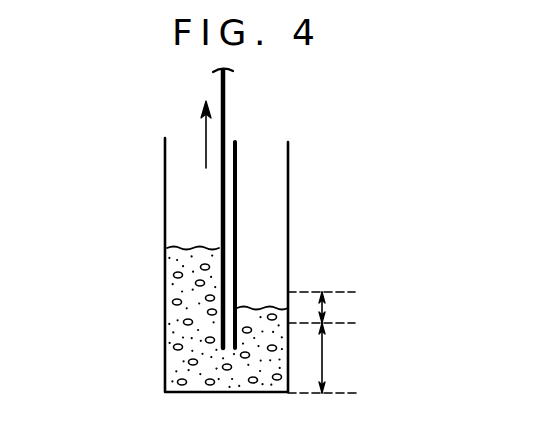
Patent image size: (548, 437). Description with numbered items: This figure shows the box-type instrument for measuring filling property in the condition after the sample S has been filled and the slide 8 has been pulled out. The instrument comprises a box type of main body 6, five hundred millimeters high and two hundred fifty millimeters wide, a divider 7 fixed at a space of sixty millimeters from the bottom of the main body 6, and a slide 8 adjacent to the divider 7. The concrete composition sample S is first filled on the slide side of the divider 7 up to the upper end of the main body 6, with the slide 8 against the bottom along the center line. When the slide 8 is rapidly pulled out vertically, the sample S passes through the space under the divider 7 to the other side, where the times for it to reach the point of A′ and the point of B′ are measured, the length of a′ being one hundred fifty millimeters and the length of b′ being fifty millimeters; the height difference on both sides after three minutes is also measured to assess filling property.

The main body 6 is at (288, 192).
The divider 7 is at (237, 180).
The slide 8 is at (226, 112).
The sample S is at (175, 291).
The point A' A′ is at (288, 323).
The point B' B′ is at (288, 292).
The length a' a′ is at (335, 358).
The length b' b′ is at (338, 308).